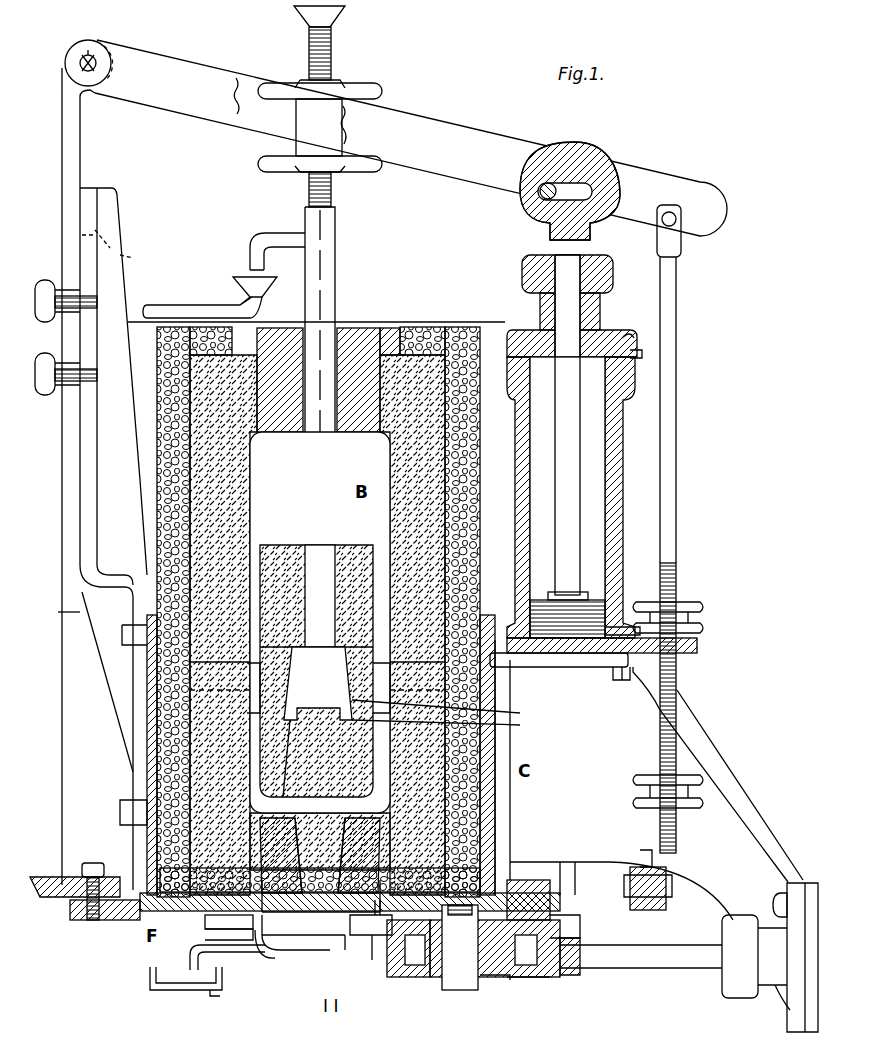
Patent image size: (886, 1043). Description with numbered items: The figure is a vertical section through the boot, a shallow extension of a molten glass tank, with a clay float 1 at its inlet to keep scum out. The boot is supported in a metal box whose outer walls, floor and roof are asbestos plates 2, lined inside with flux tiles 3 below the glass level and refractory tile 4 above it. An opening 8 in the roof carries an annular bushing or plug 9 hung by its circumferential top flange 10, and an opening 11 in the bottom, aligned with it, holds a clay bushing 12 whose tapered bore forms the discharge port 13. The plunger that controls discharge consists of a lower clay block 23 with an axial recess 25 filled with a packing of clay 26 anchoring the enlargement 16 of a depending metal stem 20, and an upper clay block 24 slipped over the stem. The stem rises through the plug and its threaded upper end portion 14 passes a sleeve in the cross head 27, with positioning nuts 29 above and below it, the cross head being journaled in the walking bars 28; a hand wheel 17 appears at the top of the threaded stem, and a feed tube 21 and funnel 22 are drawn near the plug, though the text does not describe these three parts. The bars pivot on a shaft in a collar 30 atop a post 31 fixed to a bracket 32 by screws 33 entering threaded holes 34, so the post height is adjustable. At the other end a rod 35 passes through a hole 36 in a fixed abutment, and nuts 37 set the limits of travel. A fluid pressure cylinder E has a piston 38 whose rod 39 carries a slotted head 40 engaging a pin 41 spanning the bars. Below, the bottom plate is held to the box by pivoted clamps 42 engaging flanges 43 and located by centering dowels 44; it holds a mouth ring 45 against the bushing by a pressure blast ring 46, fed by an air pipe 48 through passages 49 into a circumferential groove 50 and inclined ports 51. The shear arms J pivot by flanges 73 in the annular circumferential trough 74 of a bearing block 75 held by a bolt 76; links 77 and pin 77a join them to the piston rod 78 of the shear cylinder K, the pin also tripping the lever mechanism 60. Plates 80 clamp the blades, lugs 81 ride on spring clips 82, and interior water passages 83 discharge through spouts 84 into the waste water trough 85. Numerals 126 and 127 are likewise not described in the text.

The clay float 1 is at (380, 672).
The asbestos plates 2 is at (440, 330).
The flux tiles 3 is at (495, 760).
The refractory tile 4 is at (395, 466).
The opening in the roof of the boot 8 is at (362, 328).
The annular bushing or plug 9 is at (368, 340).
The circumferential top flange 10 is at (392, 332).
The opening in the bottom of the boot 11 is at (350, 285).
The clay bushing 12 is at (300, 832).
The discharge port 13 is at (318, 963).
The threaded upper end portion 14 is at (331, 193).
The enlargement 16 is at (318, 790).
The hand wheel 17 is at (337, 21).
The depending metal stem 20 is at (305, 462).
The feed tube 21 is at (256, 242).
The funnel 22 is at (243, 283).
The clay block 23 is at (371, 805).
The upper clay block 24 is at (272, 545).
The axial recess 25 is at (281, 767).
The packing of clay 26 is at (448, 718).
The cross head 27 is at (340, 146).
The walking bars 28 is at (411, 138).
The positioning nuts 29 is at (280, 99).
The collar 30 is at (88, 74).
The post 31 is at (82, 140).
The fixed bracket 32 is at (126, 285).
The screws 33 is at (45, 353).
The threaded holes 34 is at (117, 248).
The rod 35 is at (676, 480).
The hole 36 is at (675, 655).
The nuts 37 is at (700, 608).
The piston 38 is at (598, 620).
The piston rod 39 is at (580, 548).
The head 40 is at (610, 160).
The pin 41 is at (552, 186).
The pivoted clamps 42 is at (62, 877).
The flanges 43 is at (110, 880).
The centering dowels 44 is at (112, 922).
The mouth ring 45 is at (285, 950).
The pressure blast ring 46 is at (256, 963).
The air pipe 48 is at (525, 850).
The passages 49 is at (383, 1002).
The circumferential groove 50 is at (380, 965).
The inclined ports 51 is at (368, 960).
The lever mechanism 60 is at (590, 862).
The pivot flanges 73 is at (482, 974).
The annular circumferential trough 74 is at (530, 977).
The bearing block 75 is at (415, 977).
The bolt 76 is at (460, 990).
The links 77 is at (572, 975).
The pin 77a is at (565, 922).
The piston rod 78 is at (650, 945).
The plates 80 is at (321, 955).
The lugs 81 is at (205, 925).
The spring clips 82 is at (209, 941).
The interior water passages 83 is at (495, 992).
The discharge spouts 84 is at (227, 958).
The waste water trough 85 is at (186, 986).
The flange lug 126 is at (636, 348).
The stop 127 is at (631, 611).
The fluid pressure cylinder E is at (574, 446).
The shear arms J is at (528, 946).
The shear cylinder K is at (725, 849).